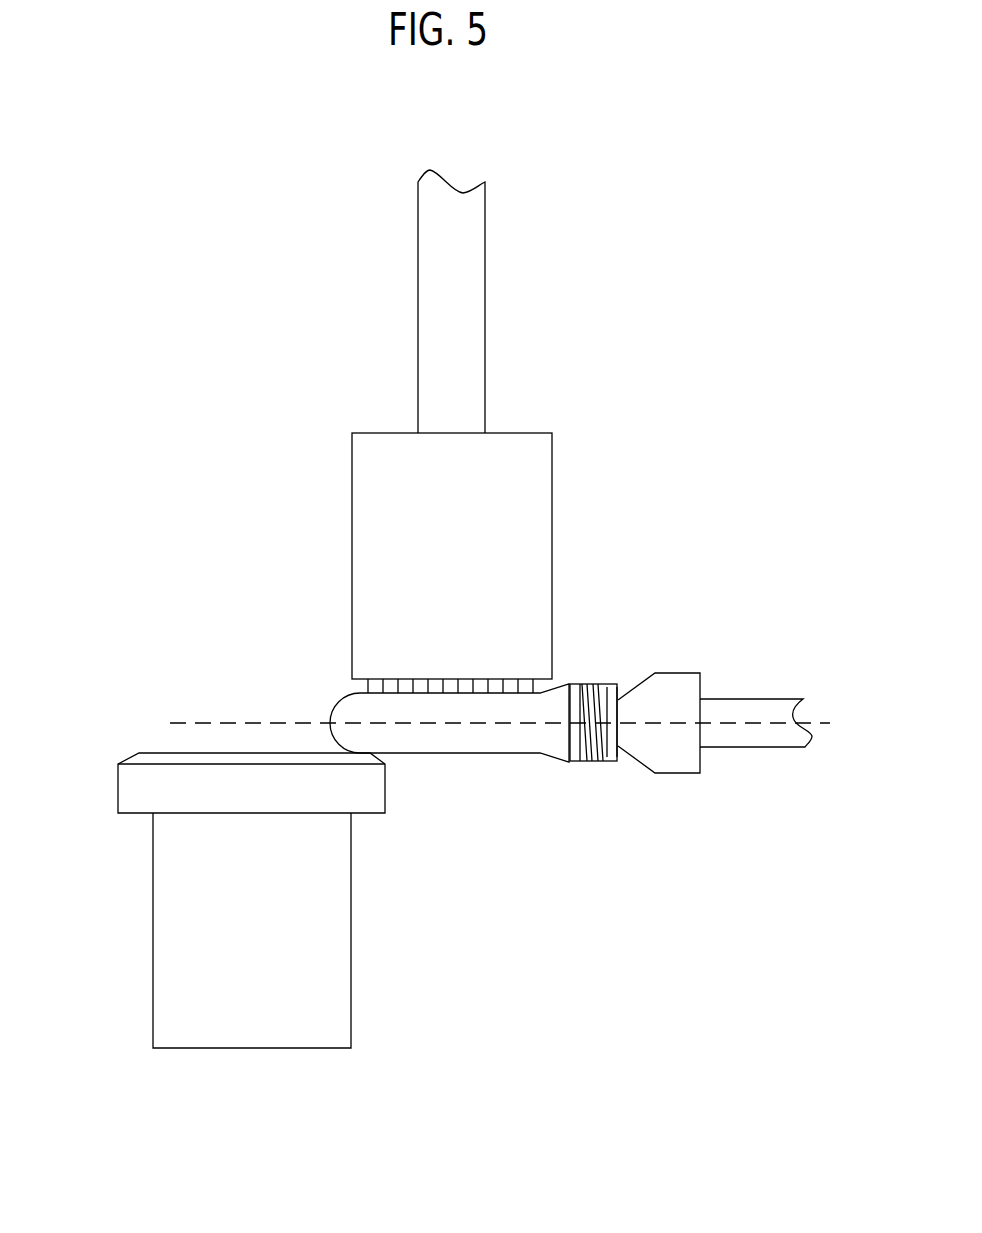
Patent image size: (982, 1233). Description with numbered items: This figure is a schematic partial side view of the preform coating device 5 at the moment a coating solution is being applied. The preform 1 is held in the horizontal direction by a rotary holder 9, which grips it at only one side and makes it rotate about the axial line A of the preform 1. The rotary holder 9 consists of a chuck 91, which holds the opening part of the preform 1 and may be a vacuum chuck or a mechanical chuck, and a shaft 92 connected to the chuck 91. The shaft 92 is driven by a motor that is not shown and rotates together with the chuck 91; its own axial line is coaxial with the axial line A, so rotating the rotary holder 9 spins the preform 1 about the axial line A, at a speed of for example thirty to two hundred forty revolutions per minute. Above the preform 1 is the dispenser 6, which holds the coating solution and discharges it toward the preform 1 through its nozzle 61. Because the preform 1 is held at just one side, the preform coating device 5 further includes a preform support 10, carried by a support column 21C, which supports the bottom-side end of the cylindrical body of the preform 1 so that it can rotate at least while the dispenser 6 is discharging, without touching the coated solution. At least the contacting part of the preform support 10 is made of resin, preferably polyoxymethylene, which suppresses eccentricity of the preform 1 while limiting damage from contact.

The preform coating device 5 is at (175, 268).
The dispenser 6 is at (524, 321).
The nozzle 61 is at (552, 497).
The preform 1 is at (479, 753).
The rotary holder 9 is at (742, 680).
The chuck 91 is at (678, 773).
The shaft 92 is at (770, 747).
The preform support 10 is at (118, 790).
The support column 21C is at (351, 993).
The axial line A is at (226, 722).